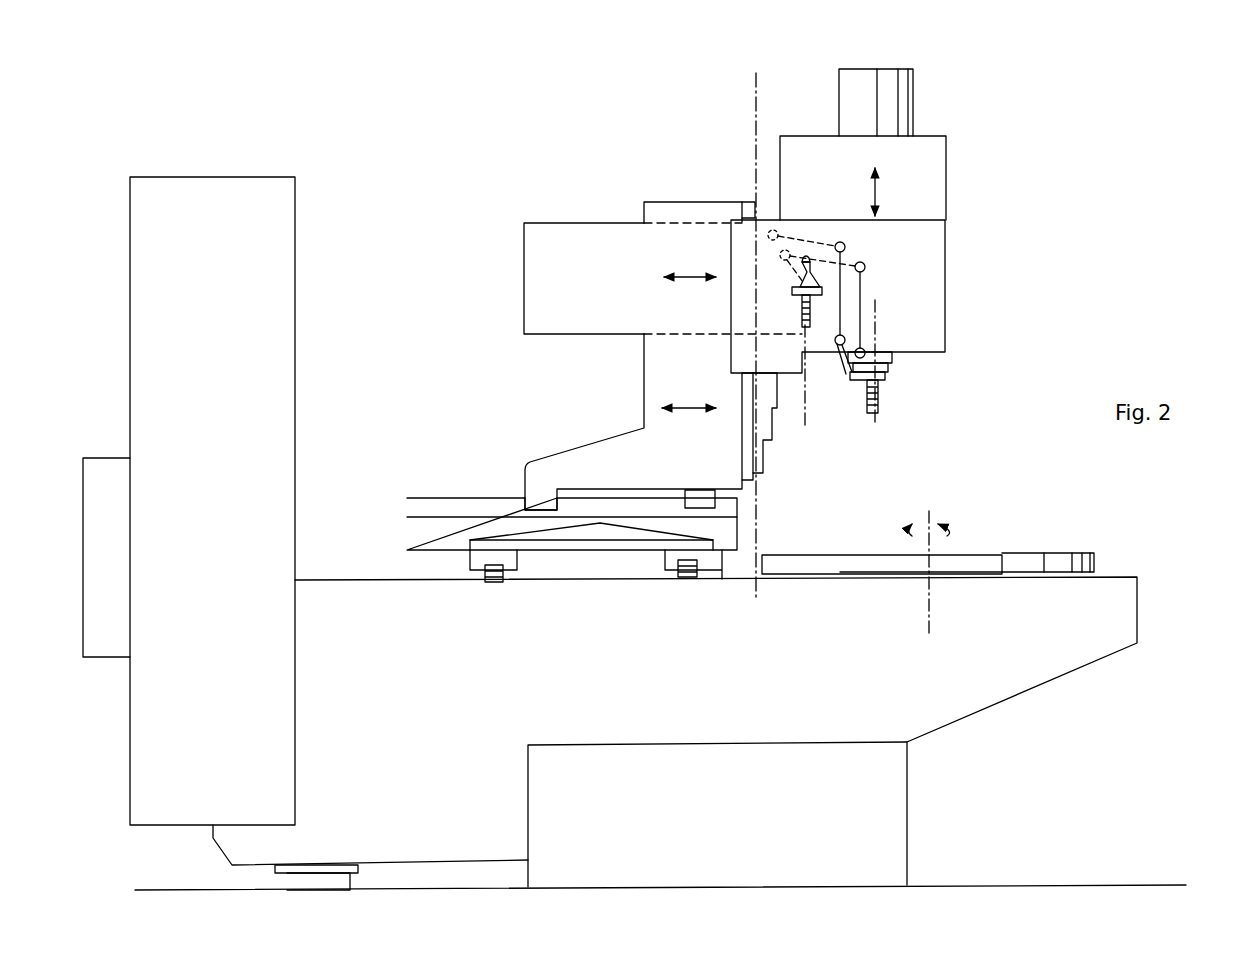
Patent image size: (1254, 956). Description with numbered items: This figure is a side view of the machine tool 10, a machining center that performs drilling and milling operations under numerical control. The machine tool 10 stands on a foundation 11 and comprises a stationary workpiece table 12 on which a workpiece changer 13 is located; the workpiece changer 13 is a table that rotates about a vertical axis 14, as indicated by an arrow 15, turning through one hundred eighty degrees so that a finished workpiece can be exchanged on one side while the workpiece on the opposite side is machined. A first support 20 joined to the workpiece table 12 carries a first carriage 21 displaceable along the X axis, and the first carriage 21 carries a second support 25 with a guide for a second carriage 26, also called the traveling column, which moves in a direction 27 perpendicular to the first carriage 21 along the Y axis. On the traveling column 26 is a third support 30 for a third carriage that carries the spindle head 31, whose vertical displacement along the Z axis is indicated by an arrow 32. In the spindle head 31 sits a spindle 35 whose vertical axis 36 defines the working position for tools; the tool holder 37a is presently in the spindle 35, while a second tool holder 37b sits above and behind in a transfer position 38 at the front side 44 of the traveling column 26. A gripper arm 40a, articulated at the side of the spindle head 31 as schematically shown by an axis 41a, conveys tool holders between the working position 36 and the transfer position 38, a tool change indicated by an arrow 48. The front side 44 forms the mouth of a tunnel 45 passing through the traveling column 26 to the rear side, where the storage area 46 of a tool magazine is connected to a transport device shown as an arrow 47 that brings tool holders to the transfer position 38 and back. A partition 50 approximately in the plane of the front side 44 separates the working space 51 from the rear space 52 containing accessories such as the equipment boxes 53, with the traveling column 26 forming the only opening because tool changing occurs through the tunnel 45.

The machine tool 10 is at (1040, 199).
The foundation 11 is at (1066, 882).
The workpiece table 12 is at (1111, 628).
The workpiece changer 13 is at (1031, 566).
The vertical axis 14 is at (932, 596).
The arrow 15 is at (950, 532).
The first support 20 is at (360, 579).
The first carriage 21 is at (552, 552).
The second support 25 is at (425, 494).
The second carriage (traveling column) 26 is at (521, 478).
The direction 27 is at (686, 409).
The third support 30 is at (762, 208).
The spindle head 31 is at (777, 156).
The arrow 32 is at (873, 188).
The spindle 35 is at (892, 355).
The axis (working position) 36 is at (876, 317).
The tool holder 37a is at (882, 397).
The second tool holder 37b is at (831, 306).
The transfer position 38 is at (806, 428).
The gripper arm 40a is at (840, 310).
The axis 41a is at (845, 244).
The front side 44 is at (778, 433).
The tunnel 45 is at (692, 322).
The storage area 46 is at (575, 245).
The transport device (arrow) 47 is at (688, 276).
The arrow 48 is at (805, 360).
The partition 50 is at (753, 87).
The working space 51 is at (1025, 460).
The rear space 52 is at (480, 355).
The equipment boxes 53 is at (275, 307).